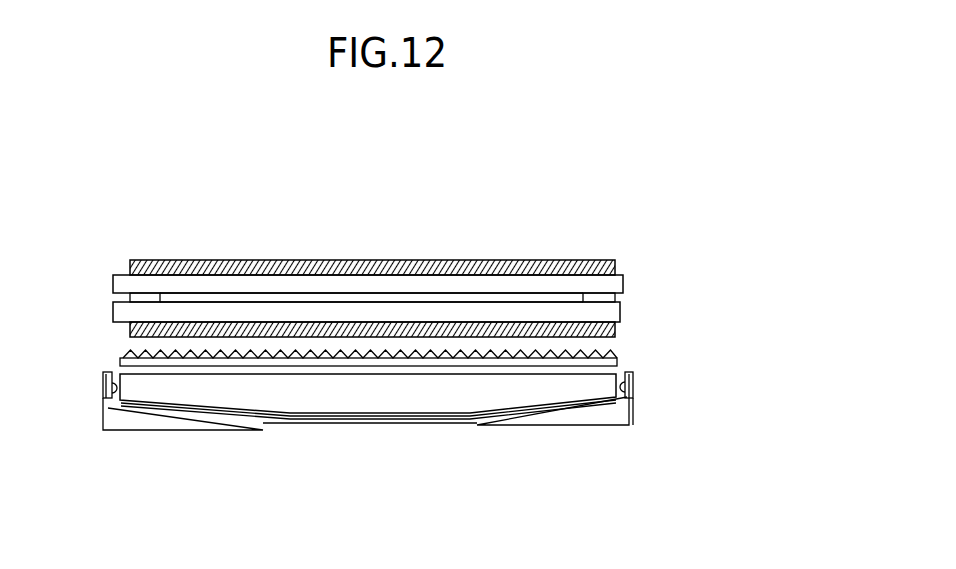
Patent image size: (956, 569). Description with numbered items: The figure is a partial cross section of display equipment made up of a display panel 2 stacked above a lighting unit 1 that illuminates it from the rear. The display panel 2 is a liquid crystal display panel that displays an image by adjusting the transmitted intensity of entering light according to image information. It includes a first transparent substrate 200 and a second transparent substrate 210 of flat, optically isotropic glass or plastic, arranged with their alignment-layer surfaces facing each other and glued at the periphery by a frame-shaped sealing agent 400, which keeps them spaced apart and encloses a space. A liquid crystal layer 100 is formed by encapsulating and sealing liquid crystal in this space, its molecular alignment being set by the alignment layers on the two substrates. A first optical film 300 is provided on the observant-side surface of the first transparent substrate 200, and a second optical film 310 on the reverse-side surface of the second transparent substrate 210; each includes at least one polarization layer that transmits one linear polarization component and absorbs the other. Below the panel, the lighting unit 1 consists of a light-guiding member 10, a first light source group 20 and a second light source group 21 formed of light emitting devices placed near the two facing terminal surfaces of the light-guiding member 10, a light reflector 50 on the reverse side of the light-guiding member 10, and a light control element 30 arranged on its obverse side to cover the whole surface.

The lighting unit 1 is at (672, 343).
The display panel 2 is at (672, 260).
The light-guiding member 10 is at (437, 405).
The first light source group 20 is at (100, 402).
The second light source group 21 is at (636, 397).
The light control element 30 is at (332, 360).
The light reflector 50 is at (372, 420).
The liquid crystal layer 100 is at (387, 297).
The first transparent substrate 200 is at (173, 285).
The second transparent substrate 210 is at (210, 313).
The first optical film 300 is at (565, 270).
The second optical film 310 is at (267, 328).
The sealing agent 400 is at (138, 300).